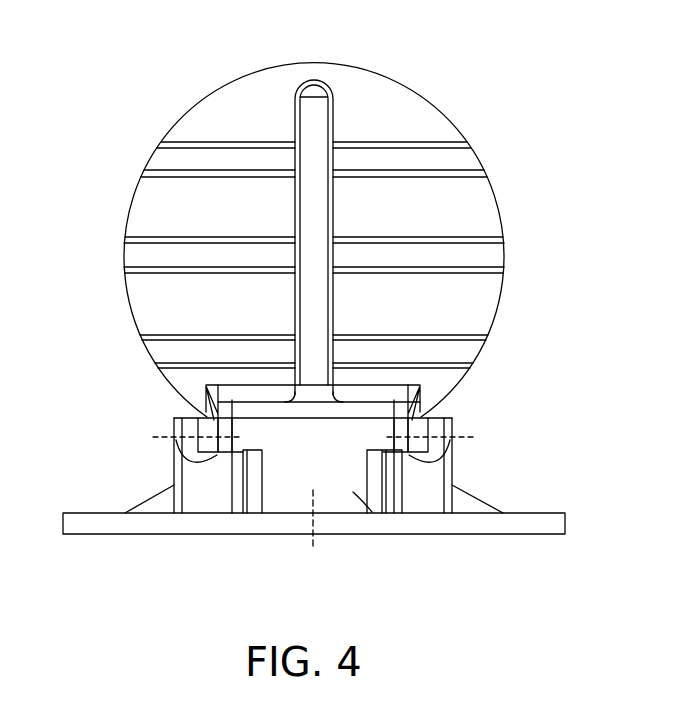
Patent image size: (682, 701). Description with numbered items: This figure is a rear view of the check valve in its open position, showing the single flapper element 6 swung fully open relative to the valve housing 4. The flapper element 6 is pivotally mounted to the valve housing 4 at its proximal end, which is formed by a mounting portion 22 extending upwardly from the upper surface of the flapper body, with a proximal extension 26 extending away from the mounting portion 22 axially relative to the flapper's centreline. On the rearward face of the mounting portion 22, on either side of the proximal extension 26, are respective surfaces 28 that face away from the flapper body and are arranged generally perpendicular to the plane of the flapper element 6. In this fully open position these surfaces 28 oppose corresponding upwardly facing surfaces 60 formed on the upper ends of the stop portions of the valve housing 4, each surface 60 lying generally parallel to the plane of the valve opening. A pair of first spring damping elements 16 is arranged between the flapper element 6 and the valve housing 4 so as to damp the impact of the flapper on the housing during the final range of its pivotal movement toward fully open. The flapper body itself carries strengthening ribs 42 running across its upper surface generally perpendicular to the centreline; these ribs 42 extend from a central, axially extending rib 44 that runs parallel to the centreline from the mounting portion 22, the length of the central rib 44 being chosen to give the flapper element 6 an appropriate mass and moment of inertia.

The valve housing 4 is at (543, 520).
The flapper element 6 is at (490, 212).
The first spring damping elements 16 is at (173, 467).
The mounting portion 22 is at (423, 407).
The proximal extension 26 is at (370, 495).
The surfaces 28 is at (240, 455).
The strengthening ribs 42 is at (457, 160).
The central rib 44 is at (322, 115).
The upwardly facing surface 60 is at (217, 458).